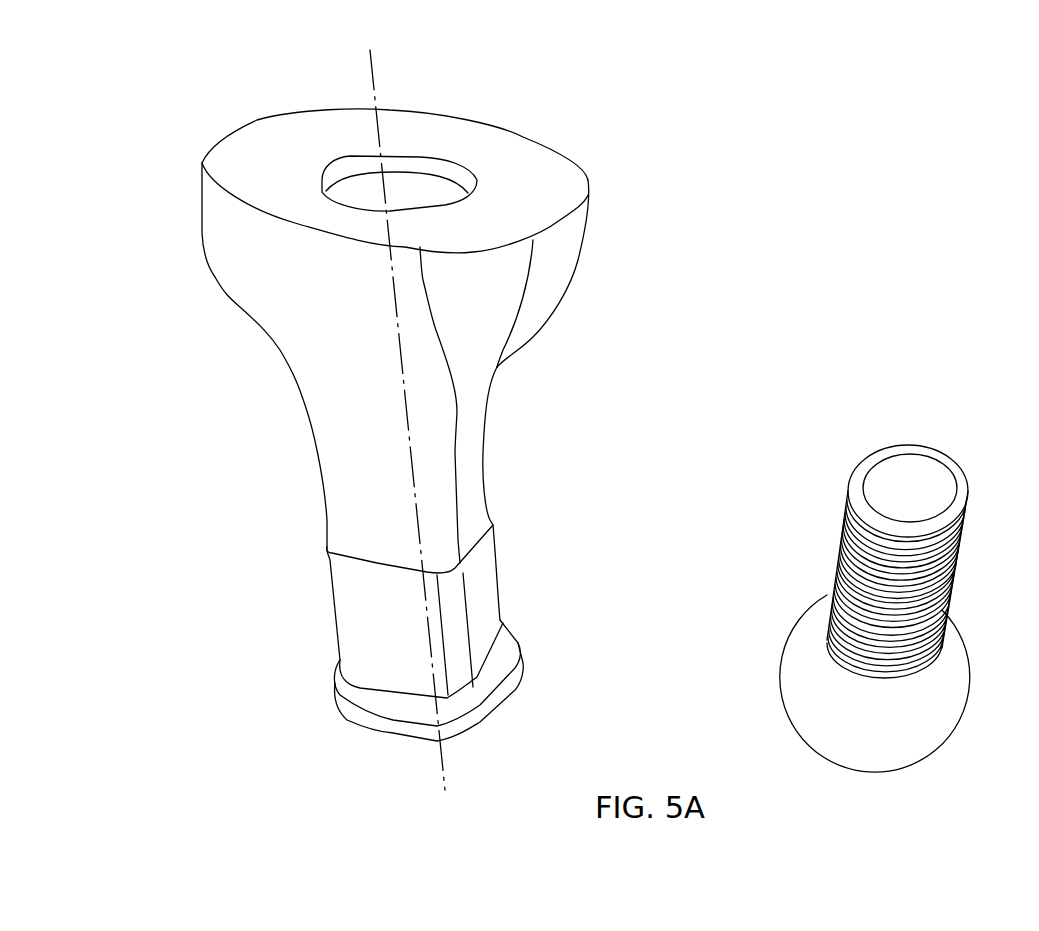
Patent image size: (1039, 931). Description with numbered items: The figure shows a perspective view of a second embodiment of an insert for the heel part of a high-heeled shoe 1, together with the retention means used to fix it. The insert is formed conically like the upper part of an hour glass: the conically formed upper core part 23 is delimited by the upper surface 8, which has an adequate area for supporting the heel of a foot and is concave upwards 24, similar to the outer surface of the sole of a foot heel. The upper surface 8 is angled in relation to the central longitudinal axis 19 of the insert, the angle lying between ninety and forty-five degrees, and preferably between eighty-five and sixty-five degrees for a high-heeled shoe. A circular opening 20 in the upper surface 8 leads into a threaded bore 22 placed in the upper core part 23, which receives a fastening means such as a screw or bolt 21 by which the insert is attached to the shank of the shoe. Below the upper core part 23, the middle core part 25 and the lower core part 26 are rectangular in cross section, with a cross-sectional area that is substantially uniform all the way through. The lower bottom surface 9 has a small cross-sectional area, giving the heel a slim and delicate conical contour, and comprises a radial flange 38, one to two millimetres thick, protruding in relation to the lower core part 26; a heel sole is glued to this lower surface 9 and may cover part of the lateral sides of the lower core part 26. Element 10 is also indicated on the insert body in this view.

The high-heeled shoe 1 is at (706, 176).
The upper surface 8 is at (568, 182).
The lower surface 9 is at (498, 695).
The body 10 is at (477, 488).
The central longitudinal axis 19 is at (442, 780).
The circular opening 20 is at (480, 178).
The bolt 21 is at (925, 570).
The threaded bore 22 is at (365, 183).
The upper core part 23 is at (558, 253).
The concave upwards 24 is at (248, 130).
The middle core part 25 is at (427, 157).
The lower core part 26 is at (500, 585).
The radial flange 38 is at (353, 695).